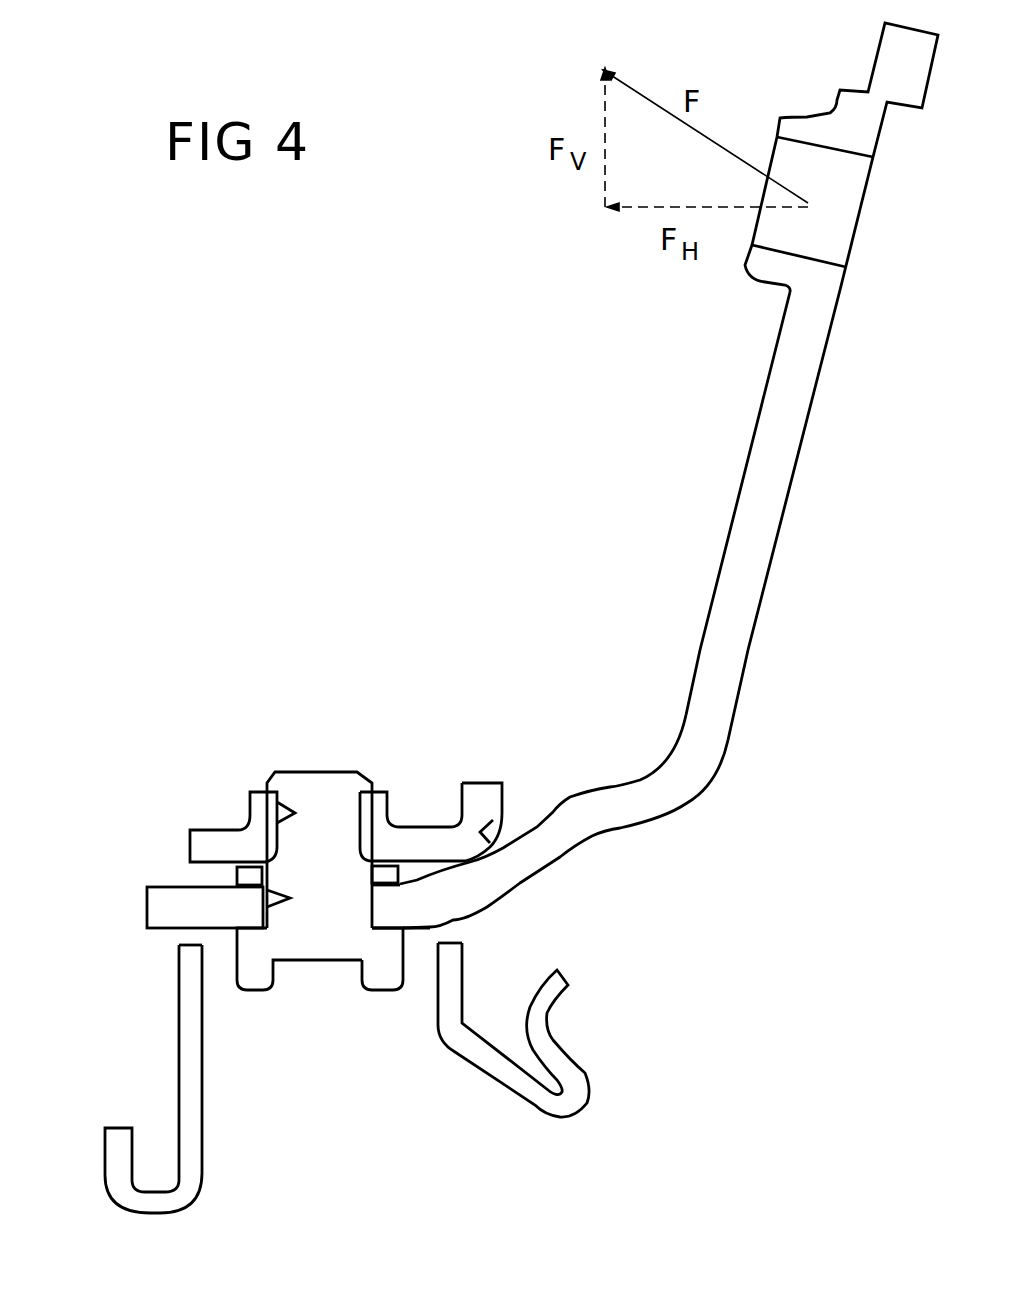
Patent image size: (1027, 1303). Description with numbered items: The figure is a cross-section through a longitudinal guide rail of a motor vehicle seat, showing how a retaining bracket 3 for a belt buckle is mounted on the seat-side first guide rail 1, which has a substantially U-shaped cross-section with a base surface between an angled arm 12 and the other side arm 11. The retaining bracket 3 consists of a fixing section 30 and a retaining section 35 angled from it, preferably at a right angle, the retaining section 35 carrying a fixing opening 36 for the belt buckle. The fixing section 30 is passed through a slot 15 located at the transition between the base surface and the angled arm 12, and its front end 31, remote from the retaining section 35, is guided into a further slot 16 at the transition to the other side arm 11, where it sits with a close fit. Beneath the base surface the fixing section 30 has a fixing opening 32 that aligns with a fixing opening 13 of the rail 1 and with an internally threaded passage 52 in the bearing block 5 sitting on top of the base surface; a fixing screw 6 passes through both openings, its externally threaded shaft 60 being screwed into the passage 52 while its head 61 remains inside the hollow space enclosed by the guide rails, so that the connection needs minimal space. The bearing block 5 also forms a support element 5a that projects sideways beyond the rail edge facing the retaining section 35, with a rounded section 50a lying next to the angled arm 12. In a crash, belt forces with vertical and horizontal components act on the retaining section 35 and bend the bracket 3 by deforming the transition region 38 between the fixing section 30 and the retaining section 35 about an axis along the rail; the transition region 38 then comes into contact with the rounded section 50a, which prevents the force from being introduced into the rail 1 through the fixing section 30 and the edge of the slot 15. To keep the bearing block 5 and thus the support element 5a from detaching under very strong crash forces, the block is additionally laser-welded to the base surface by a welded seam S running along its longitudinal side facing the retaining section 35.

The first guide rail 1 is at (307, 1063).
The other side arm 11 is at (130, 1076).
The angled arm 12 is at (513, 1032).
The fixing opening 13 is at (357, 910).
The slot 15 is at (447, 940).
The further slot 16 is at (183, 940).
The retaining bracket 3 is at (669, 475).
The fixing section 30 is at (478, 980).
The front end 31 is at (147, 912).
The fixing opening 32 is at (262, 886).
The retaining section 35 is at (800, 380).
The fixing opening 36 is at (833, 227).
The transition region 38 is at (620, 813).
The bearing block 5 is at (494, 774).
The support element 5a is at (545, 778).
The rounded section 50a is at (490, 825).
The internally threaded passage 52 is at (267, 790).
The fixing screw 6 is at (410, 842).
The shaft 60 is at (322, 837).
The head 61 is at (310, 960).
The welded seam S is at (403, 867).